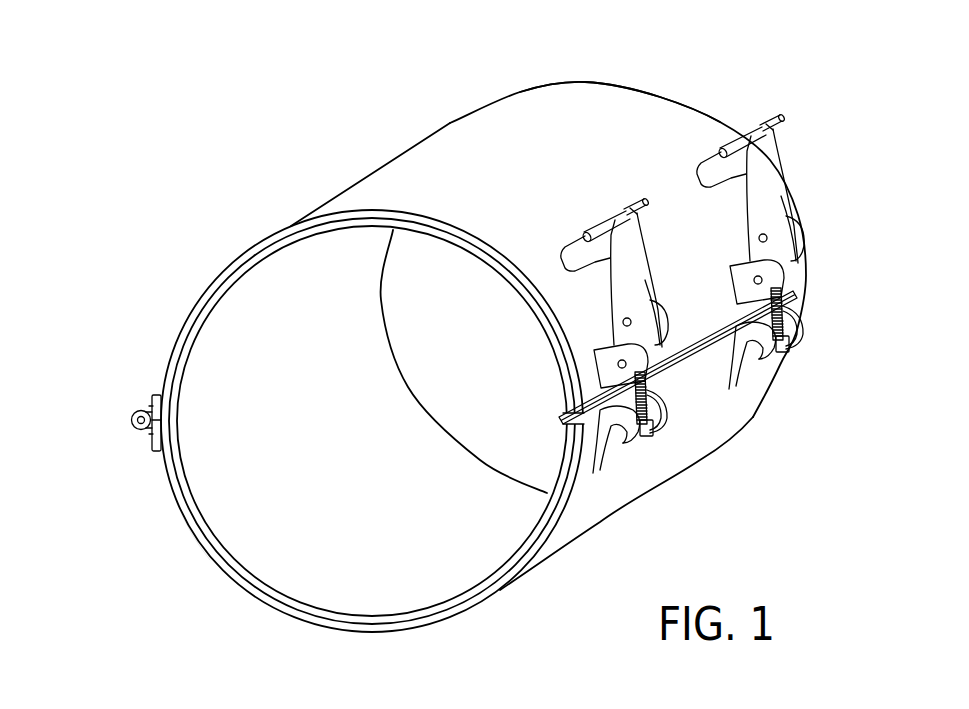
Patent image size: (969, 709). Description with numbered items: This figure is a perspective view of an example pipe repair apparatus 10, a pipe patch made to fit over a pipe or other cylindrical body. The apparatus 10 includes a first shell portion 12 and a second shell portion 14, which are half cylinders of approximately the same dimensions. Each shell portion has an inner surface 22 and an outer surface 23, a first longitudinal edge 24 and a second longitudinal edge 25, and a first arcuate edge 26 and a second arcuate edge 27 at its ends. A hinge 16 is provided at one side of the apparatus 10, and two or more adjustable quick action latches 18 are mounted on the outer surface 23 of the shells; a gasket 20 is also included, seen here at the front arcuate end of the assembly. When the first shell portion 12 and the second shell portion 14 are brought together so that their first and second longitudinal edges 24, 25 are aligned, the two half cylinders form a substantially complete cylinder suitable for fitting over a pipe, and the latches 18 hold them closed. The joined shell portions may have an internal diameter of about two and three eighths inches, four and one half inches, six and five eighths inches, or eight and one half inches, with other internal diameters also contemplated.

The pipe repair apparatus 10 is at (225, 118).
The first shell portion 12 is at (566, 174).
The second shell portion 14 is at (721, 439).
The hinge 16 is at (136, 410).
The adjustable quick action latch 18 is at (647, 230).
The gasket 20 is at (252, 262).
The inner surface 22 is at (294, 230).
The outer surface 23 is at (461, 143).
The first longitudinal edge 24 is at (161, 383).
The second longitudinal edge 25 is at (700, 343).
The first arcuate edge 26 is at (193, 512).
The second arcuate edge 27 is at (640, 90).